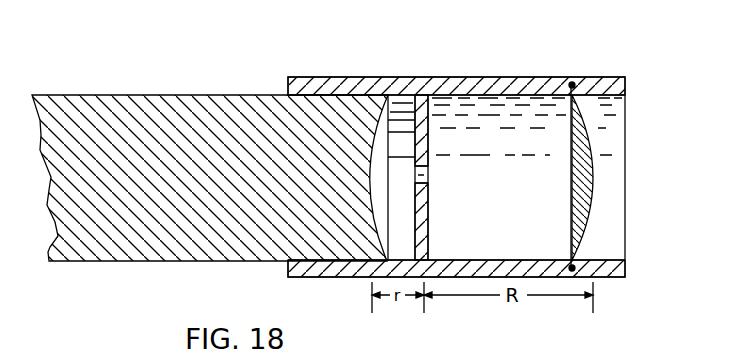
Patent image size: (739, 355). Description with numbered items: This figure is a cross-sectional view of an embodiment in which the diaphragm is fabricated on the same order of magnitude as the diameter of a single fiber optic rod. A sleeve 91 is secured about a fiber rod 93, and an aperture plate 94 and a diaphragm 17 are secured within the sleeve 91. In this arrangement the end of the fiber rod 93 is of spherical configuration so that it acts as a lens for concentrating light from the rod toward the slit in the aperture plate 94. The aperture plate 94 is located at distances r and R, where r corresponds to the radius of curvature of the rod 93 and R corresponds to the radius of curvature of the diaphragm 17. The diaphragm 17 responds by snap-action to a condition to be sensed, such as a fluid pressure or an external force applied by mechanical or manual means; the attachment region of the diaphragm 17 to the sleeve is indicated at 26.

The diaphragm 17 is at (592, 173).
The diaphragm attachment 26 is at (573, 84).
The sleeve 91 is at (456, 159).
The fiber rod 93 is at (159, 95).
The aperture plate 94 is at (427, 203).